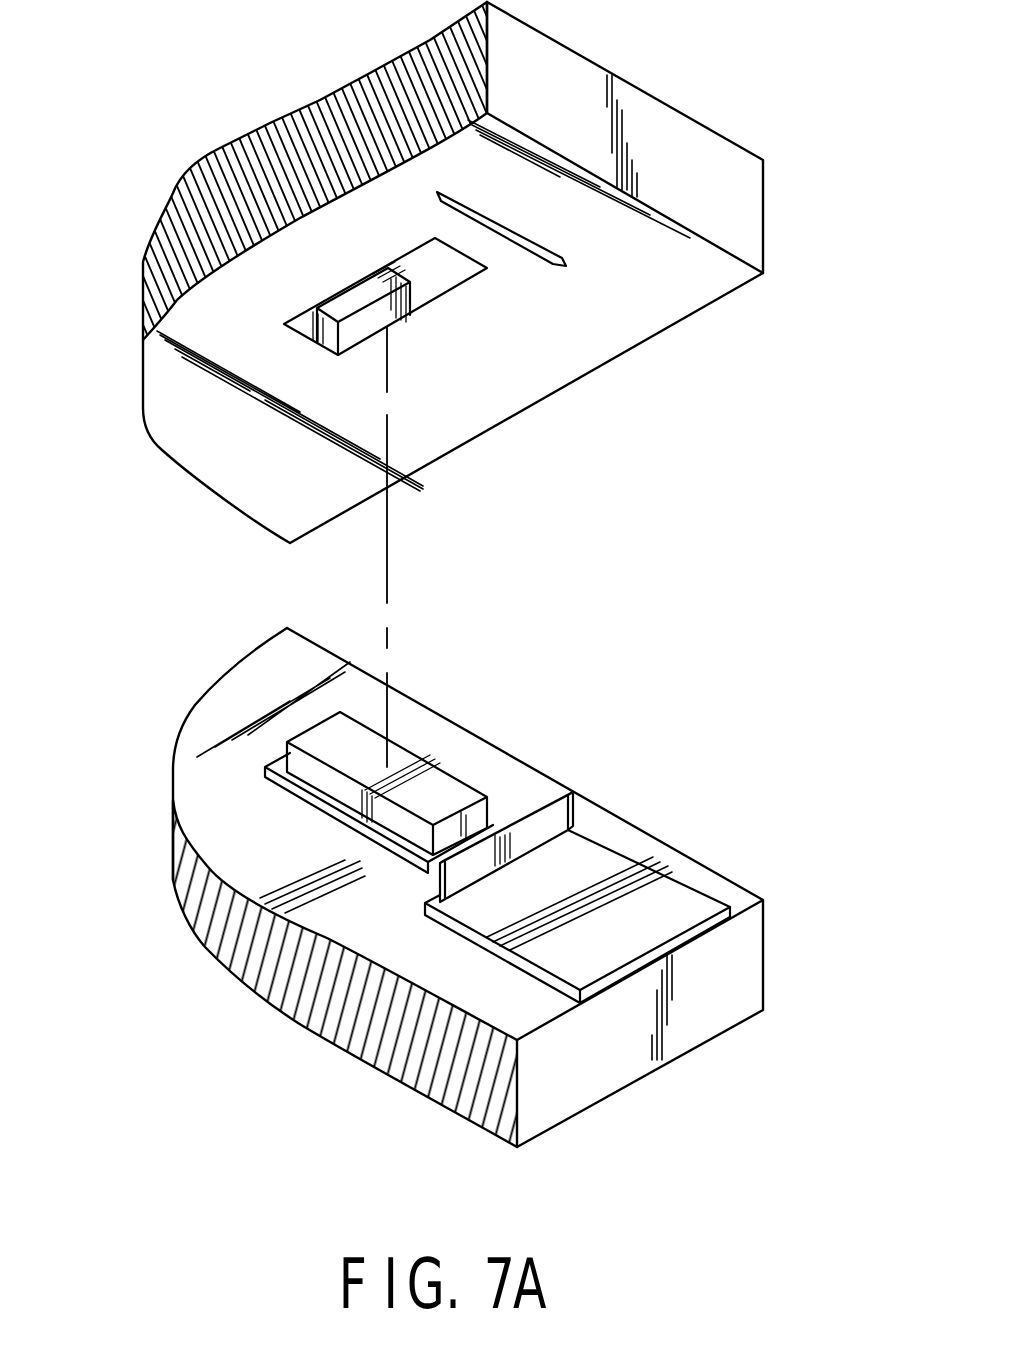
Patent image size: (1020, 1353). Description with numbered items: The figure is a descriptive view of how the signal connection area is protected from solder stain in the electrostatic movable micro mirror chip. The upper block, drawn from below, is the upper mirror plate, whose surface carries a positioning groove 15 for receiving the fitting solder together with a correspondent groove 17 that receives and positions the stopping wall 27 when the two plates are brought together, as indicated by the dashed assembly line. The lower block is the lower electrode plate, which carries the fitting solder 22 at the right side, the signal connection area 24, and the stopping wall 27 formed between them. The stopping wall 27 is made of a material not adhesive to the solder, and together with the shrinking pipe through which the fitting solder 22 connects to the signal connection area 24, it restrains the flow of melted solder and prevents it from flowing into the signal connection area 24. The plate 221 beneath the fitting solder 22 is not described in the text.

The positioning groove 15 is at (415, 298).
The correspondent groove 17 is at (553, 268).
The fitting solder 22 is at (323, 738).
The base plate 221 is at (293, 788).
The stopping wall 27 is at (535, 810).
The signal connection area 24 is at (608, 860).